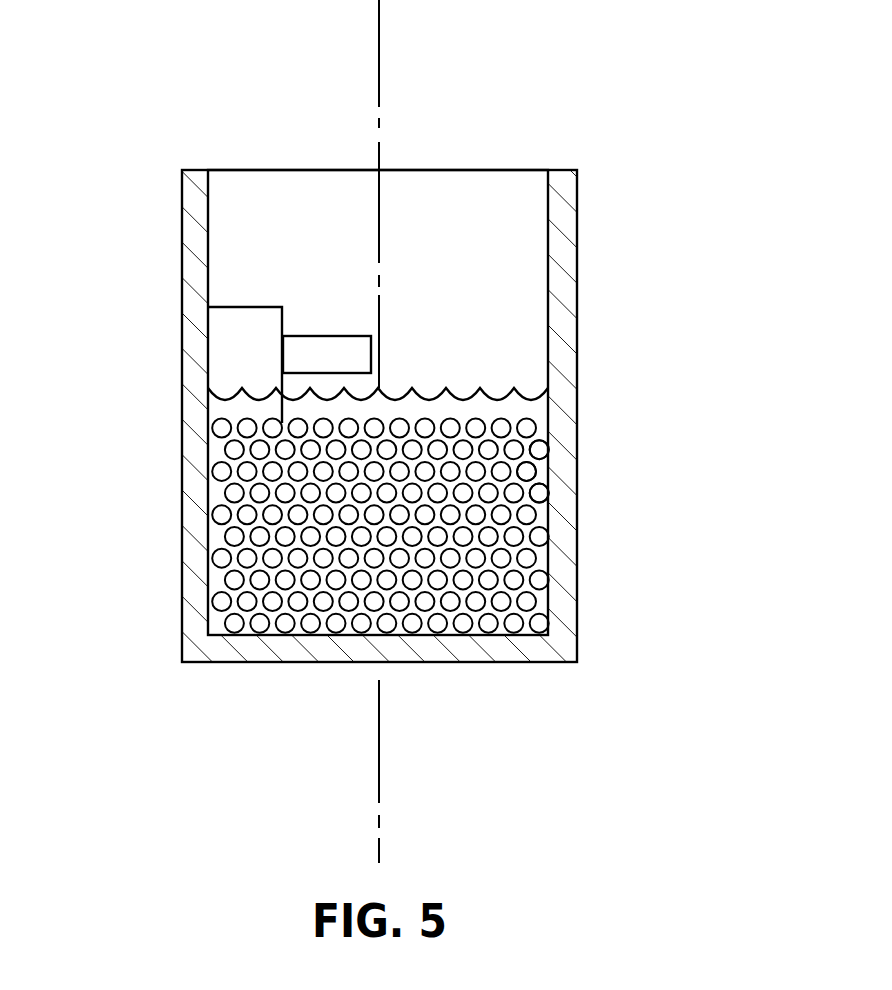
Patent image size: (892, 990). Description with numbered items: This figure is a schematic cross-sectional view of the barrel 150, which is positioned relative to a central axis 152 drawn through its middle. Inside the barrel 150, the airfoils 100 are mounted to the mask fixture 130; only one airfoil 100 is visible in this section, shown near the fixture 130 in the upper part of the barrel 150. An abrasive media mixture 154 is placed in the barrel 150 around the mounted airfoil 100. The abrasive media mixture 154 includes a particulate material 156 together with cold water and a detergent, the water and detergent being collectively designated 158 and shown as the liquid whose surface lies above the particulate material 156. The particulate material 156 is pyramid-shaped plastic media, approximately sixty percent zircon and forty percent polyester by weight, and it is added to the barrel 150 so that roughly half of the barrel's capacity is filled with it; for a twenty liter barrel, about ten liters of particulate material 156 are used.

The airfoil 100 is at (337, 345).
The mask fixture 130 is at (226, 349).
The barrel 150 is at (560, 257).
The central axis 152 is at (380, 742).
The abrasive media mixture 154 is at (172, 392).
The particulate material 156 is at (528, 470).
The water and detergent 158 is at (528, 410).